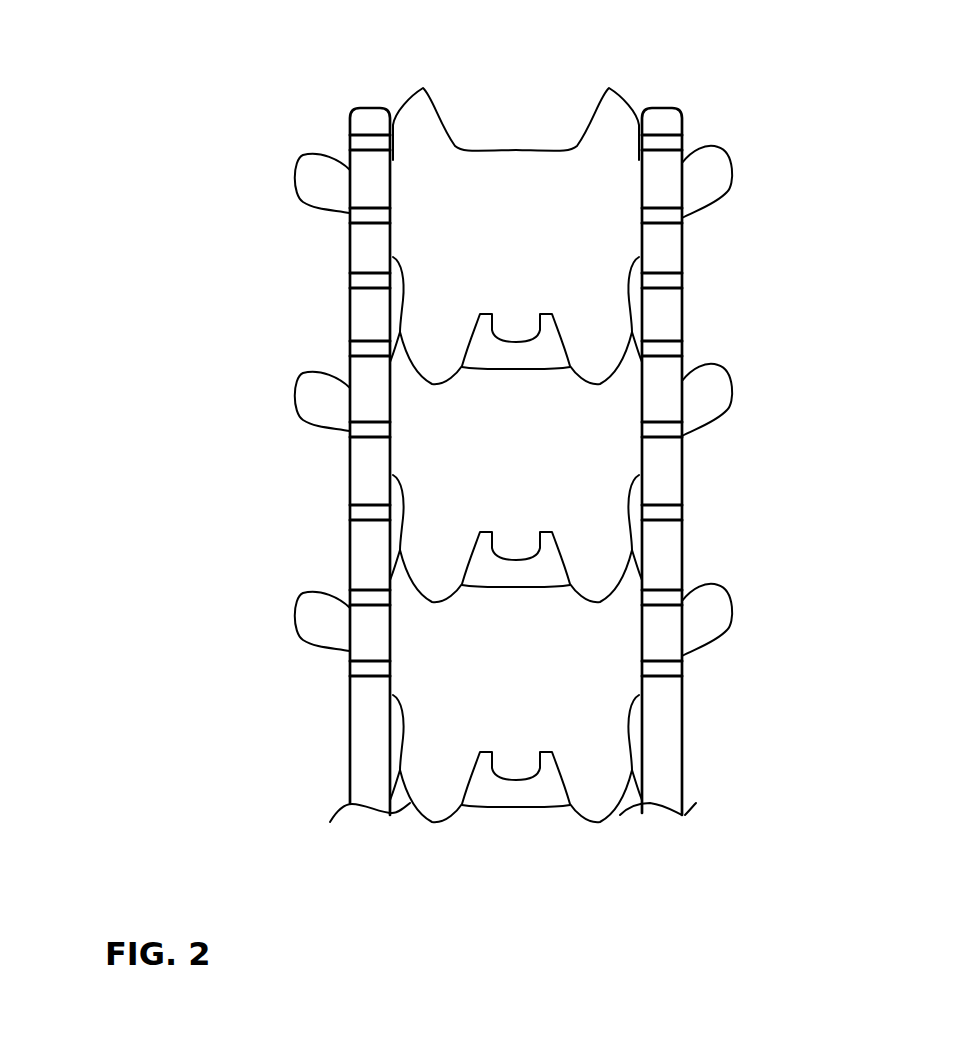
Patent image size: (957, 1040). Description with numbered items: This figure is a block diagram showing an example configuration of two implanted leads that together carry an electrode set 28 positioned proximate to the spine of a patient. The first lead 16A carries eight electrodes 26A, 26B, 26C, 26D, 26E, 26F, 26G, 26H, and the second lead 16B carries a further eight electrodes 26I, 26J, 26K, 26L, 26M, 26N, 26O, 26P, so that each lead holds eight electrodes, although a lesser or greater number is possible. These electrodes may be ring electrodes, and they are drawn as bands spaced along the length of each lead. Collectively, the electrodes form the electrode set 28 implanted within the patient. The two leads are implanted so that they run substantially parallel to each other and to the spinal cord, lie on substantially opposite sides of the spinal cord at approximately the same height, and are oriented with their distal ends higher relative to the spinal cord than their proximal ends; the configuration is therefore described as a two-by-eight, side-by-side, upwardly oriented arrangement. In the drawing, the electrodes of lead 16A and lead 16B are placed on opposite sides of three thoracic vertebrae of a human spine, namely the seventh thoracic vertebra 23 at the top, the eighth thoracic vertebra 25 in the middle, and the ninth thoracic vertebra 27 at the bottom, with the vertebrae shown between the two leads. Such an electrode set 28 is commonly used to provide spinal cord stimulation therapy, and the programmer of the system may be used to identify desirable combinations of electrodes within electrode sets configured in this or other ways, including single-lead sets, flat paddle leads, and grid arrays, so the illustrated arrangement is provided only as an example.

The electrode set 28 is at (150, 83).
The T7 vertebra 23 is at (425, 110).
The T8 vertebra 25 is at (303, 418).
The T9 vertebra 27 is at (592, 803).
The lead 16A is at (363, 745).
The lead 16B is at (682, 778).
The electrode 26A is at (368, 669).
The electrode 26B is at (368, 598).
The electrode 26C is at (367, 514).
The electrode 26D is at (370, 428).
The electrode 26E is at (368, 349).
The electrode 26F is at (368, 280).
The electrode 26G is at (368, 211).
The electrode 26H is at (364, 143).
The electrode 26I is at (670, 670).
The electrode 26J is at (670, 600).
The electrode 26K is at (670, 513).
The electrode 26L is at (670, 430).
The electrode 26M is at (670, 351).
The electrode 26N is at (670, 283).
The electrode 26O is at (670, 217).
The electrode 26P is at (670, 145).